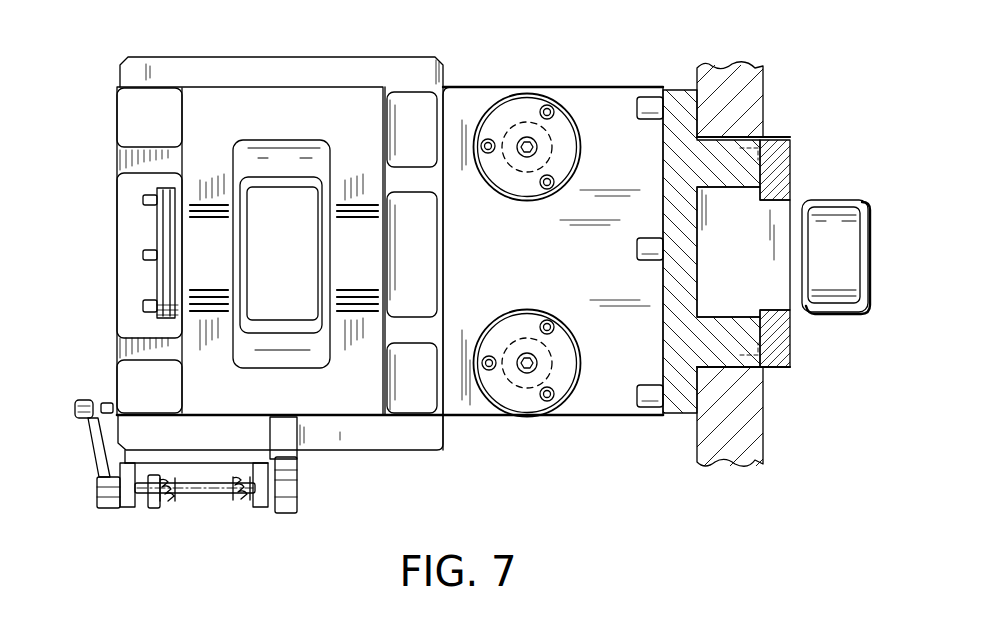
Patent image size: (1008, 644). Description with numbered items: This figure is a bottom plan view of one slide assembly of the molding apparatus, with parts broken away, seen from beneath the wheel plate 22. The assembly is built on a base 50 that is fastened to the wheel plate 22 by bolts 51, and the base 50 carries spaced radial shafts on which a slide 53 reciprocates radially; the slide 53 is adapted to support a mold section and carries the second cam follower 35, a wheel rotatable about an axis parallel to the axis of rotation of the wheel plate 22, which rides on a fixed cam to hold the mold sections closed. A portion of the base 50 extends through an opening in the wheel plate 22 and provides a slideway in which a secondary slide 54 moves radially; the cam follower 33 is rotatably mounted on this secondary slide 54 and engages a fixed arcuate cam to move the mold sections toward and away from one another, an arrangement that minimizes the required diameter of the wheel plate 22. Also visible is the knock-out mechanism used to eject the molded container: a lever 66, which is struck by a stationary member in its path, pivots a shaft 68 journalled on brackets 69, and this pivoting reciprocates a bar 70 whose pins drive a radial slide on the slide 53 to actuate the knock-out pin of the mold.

The wheel plate 22 is at (748, 84).
The cam follower 33 is at (820, 268).
The second cam follower 35 is at (270, 268).
The base 50 is at (680, 105).
The bolts 51 is at (637, 410).
The slide 53 is at (407, 68).
The secondary slide 54 is at (739, 268).
The lever 66 is at (100, 440).
The shaft 68 is at (220, 497).
The brackets 69 is at (255, 512).
The bar 70 is at (287, 448).